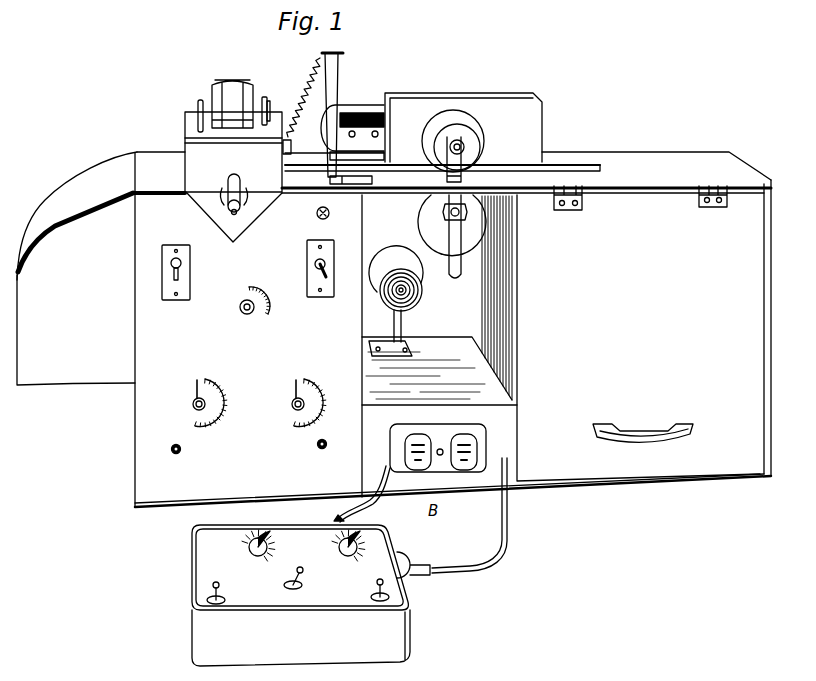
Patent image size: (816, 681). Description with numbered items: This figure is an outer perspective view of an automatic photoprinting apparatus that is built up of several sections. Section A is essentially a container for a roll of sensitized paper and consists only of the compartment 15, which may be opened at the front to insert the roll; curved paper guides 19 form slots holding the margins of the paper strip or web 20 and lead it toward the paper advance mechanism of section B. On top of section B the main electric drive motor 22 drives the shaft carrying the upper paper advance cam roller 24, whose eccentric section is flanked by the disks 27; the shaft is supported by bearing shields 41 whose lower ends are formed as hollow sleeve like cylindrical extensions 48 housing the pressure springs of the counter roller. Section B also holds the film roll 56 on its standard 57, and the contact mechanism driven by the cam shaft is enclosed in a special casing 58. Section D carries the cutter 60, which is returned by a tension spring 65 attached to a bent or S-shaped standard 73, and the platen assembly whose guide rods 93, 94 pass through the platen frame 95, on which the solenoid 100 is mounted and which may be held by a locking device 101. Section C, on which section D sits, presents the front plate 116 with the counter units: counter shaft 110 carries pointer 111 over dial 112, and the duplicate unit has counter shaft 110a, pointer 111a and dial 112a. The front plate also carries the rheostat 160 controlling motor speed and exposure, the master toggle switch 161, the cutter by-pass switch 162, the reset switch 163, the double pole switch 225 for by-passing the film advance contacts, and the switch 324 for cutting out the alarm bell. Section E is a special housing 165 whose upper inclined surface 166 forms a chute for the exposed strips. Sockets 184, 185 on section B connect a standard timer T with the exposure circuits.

The compartment 15 is at (758, 447).
The curved paper guides 19 is at (552, 163).
The paper strip or web 20 is at (578, 164).
The main electric drive motor 22 is at (352, 108).
The upper paper advance cam roller 24 is at (490, 131).
The disks 27 is at (478, 149).
The bearing shields 41 is at (452, 160).
The sleeve like cylindrical extensions 48 is at (456, 272).
The film roll 56 is at (397, 253).
The standard 57 is at (398, 325).
The special casing 58 is at (540, 105).
The cutter 60 is at (299, 143).
The tension spring 65 is at (310, 87).
The bent or S-shaped standard 73 is at (343, 72).
The guide rods 93 is at (200, 100).
The guide rods 94 is at (267, 102).
The platen frame 95 is at (190, 127).
The solenoid 100 is at (253, 93).
The locking device 101 is at (226, 204).
The counter shaft 110 is at (297, 405).
The counter shaft 110a is at (193, 406).
The pointer 111 is at (296, 386).
The pointer 111a is at (196, 390).
The dial 112 is at (313, 386).
The dial 112a is at (216, 386).
The front plate 116 is at (147, 496).
The rheostat 160 is at (252, 293).
The toggle switch 161 is at (190, 266).
The cutter by-pass switch 162 is at (178, 454).
The reset switch 163 is at (321, 449).
The special housing 165 is at (74, 388).
The inclined surface 166 is at (70, 181).
The socket 184 is at (412, 438).
The socket 185 is at (462, 438).
The double pole switch 225 is at (315, 257).
The switch 324 is at (305, 213).
The section A is at (643, 139).
The section B is at (464, 81).
The section C is at (263, 512).
The section D is at (247, 66).
The section E is at (33, 197).
The standard timer T is at (314, 595).